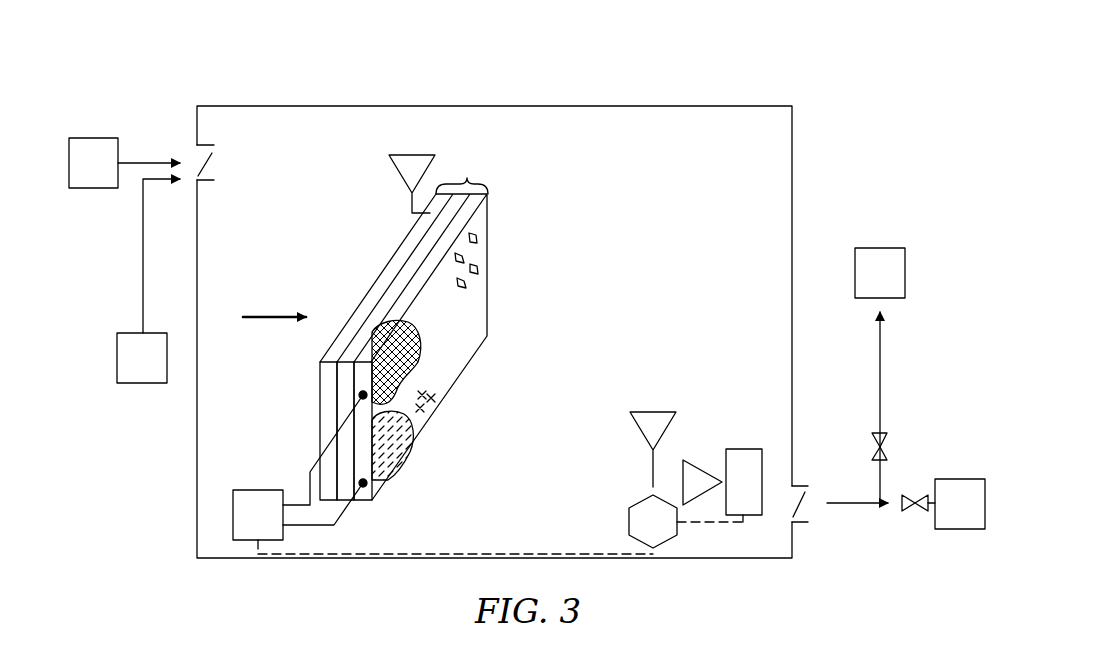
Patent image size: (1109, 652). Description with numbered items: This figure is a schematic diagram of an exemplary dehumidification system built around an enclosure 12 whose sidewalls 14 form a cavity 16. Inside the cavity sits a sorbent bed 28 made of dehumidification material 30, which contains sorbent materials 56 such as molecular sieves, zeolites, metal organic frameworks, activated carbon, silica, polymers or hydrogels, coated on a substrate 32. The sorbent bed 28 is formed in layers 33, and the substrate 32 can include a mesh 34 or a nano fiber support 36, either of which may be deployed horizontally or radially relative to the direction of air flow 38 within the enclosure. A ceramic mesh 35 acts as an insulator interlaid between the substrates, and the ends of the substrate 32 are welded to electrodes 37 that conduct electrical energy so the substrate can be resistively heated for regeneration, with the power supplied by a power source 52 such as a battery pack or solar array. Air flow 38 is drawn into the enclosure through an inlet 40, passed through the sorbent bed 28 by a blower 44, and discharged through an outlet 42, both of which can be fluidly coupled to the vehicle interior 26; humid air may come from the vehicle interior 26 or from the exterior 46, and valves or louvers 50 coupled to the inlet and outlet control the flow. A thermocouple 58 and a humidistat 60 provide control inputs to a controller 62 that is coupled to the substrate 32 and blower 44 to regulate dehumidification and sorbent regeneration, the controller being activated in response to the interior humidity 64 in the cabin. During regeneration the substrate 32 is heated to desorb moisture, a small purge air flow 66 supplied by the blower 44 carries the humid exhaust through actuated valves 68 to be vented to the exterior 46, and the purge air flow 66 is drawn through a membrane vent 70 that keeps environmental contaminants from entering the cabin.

The enclosure 12 is at (205, 104).
The sidewalls 14 is at (792, 157).
The cavity 16 is at (707, 149).
The vehicle interior 26 is at (946, 518).
The sorbent bed 28 is at (394, 204).
The dehumidification material 30 is at (480, 242).
The substrate 32 is at (488, 205).
The layers 33 is at (467, 178).
The mesh 34 is at (413, 365).
The ceramic mesh 35 is at (347, 388).
The nano fiber support 36 is at (398, 458).
The electrodes 37 is at (300, 503).
The air flow 38 is at (257, 316).
The inlet 40 is at (183, 146).
The outlet 42 is at (822, 494).
The blower 44 is at (743, 449).
The exterior 46 is at (92, 250).
The valves or louvers 50 is at (205, 142).
The power source 52 is at (244, 529).
The sorbent materials 56 is at (427, 412).
The thermocouple 58 is at (413, 165).
The humidistat 60 is at (652, 418).
The controller 62 is at (79, 177).
The interior humidity 64 is at (291, 147).
The purge air flow 66 is at (128, 372).
The actuated valves 68 is at (885, 446).
The membrane vent 70 is at (705, 468).